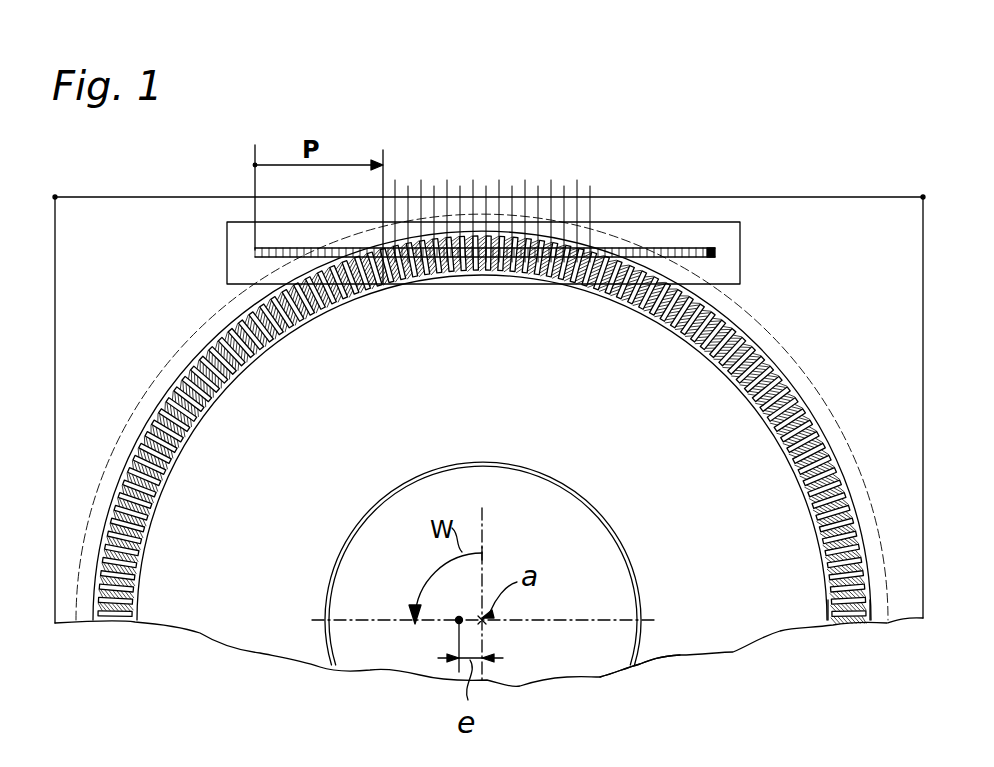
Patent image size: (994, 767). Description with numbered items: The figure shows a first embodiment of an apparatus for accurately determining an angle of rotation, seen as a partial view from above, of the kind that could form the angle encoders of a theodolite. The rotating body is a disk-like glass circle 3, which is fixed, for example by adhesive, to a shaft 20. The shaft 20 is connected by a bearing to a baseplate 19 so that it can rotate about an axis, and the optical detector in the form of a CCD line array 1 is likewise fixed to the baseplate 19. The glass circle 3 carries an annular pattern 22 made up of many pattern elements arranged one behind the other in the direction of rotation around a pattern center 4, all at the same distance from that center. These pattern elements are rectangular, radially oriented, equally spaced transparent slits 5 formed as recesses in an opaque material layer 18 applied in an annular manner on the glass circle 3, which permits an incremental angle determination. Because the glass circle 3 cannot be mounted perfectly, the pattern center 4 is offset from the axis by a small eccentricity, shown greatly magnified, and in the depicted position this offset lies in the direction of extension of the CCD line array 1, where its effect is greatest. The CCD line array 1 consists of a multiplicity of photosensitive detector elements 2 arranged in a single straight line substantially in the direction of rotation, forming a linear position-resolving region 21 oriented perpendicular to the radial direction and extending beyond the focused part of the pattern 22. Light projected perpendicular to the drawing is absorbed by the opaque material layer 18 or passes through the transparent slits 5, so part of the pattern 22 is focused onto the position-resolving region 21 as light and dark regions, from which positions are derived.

The CCD line array 1 is at (725, 238).
The photosensitive detector elements 2 is at (712, 250).
The position-resolving region 21 is at (722, 255).
The transparent slits 5 is at (383, 263).
The annular pattern 22 is at (482, 461).
The opaque material layer 18 is at (827, 610).
The baseplate 19 is at (65, 613).
The glass circle 3 is at (203, 623).
The shaft 20 is at (603, 657).
The pattern center 4 is at (456, 622).